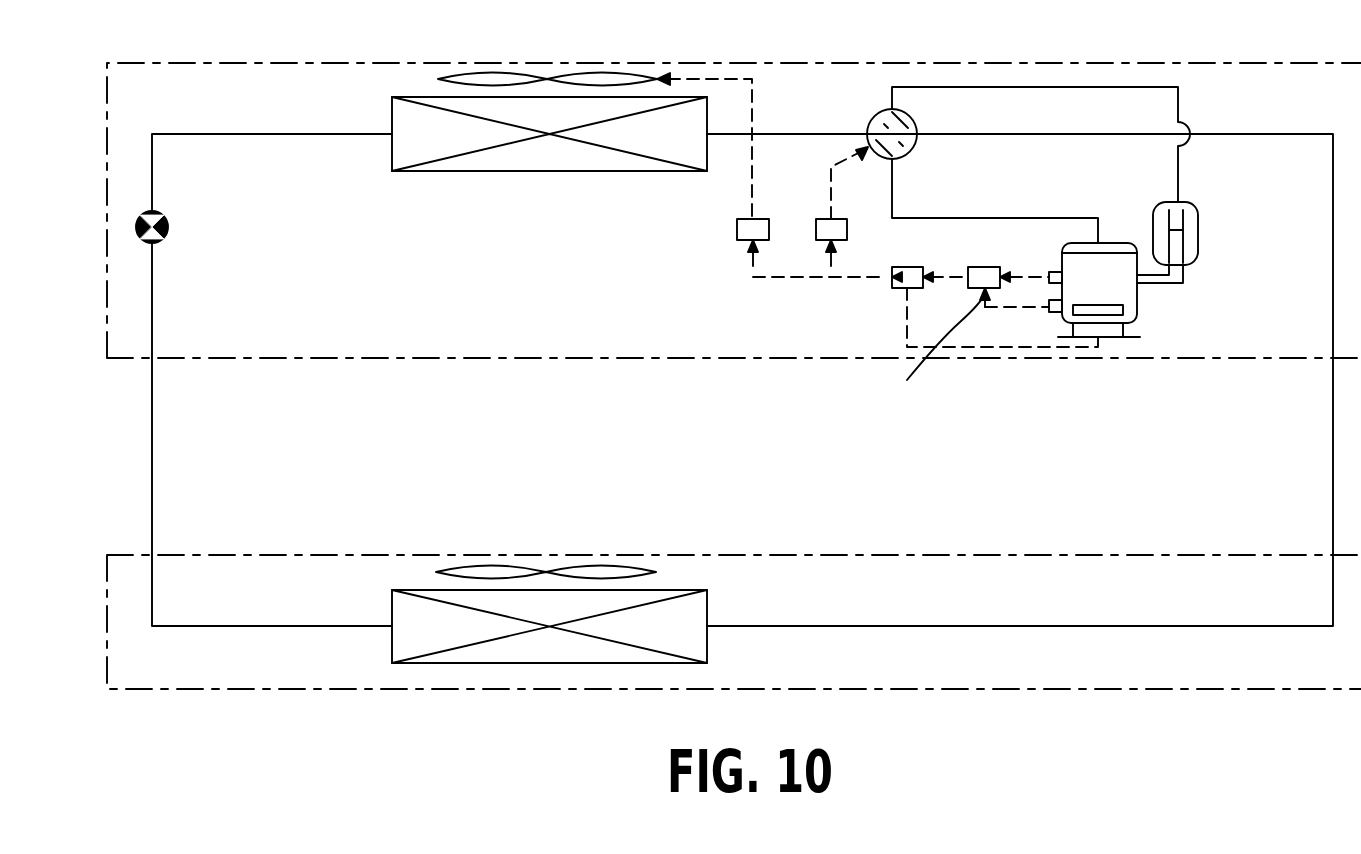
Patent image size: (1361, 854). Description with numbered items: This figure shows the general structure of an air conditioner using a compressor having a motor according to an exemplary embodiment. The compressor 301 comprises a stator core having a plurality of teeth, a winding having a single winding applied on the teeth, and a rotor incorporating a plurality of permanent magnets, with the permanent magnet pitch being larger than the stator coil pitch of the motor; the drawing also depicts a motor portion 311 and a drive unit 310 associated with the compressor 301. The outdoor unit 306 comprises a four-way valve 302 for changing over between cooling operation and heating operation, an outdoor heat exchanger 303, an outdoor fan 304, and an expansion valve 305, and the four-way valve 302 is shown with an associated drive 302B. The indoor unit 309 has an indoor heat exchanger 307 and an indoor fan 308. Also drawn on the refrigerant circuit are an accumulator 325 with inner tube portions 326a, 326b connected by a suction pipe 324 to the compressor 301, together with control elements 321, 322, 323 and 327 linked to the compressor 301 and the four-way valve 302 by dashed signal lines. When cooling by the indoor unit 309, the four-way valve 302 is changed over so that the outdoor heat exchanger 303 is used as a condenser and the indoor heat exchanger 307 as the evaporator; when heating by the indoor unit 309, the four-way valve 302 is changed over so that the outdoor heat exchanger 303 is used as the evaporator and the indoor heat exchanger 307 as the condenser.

The compressor 301 is at (1137, 295).
The four-way valve 302 is at (917, 127).
The four-way valve drive unit 302B is at (737, 228).
The outdoor heat exchanger 303 is at (552, 171).
The outdoor fan 304 is at (498, 80).
The expansion valve 305 is at (165, 238).
The outdoor unit 306 is at (436, 359).
The indoor heat exchanger 307 is at (707, 626).
The indoor fan 308 is at (470, 565).
The indoor unit 309 is at (1045, 555).
The compressor drive unit 310 is at (1050, 314).
The motor 311 is at (1140, 308).
The temperature sensor 321 is at (920, 354).
The controller 322 is at (985, 267).
The controller 323 is at (905, 267).
The suction pipe 324 is at (1187, 277).
The accumulator 325 is at (1187, 202).
The accumulator inner pipe 326a is at (1183, 257).
The accumulator inner pipe 326b is at (1180, 228).
The valve controller 327 is at (847, 232).